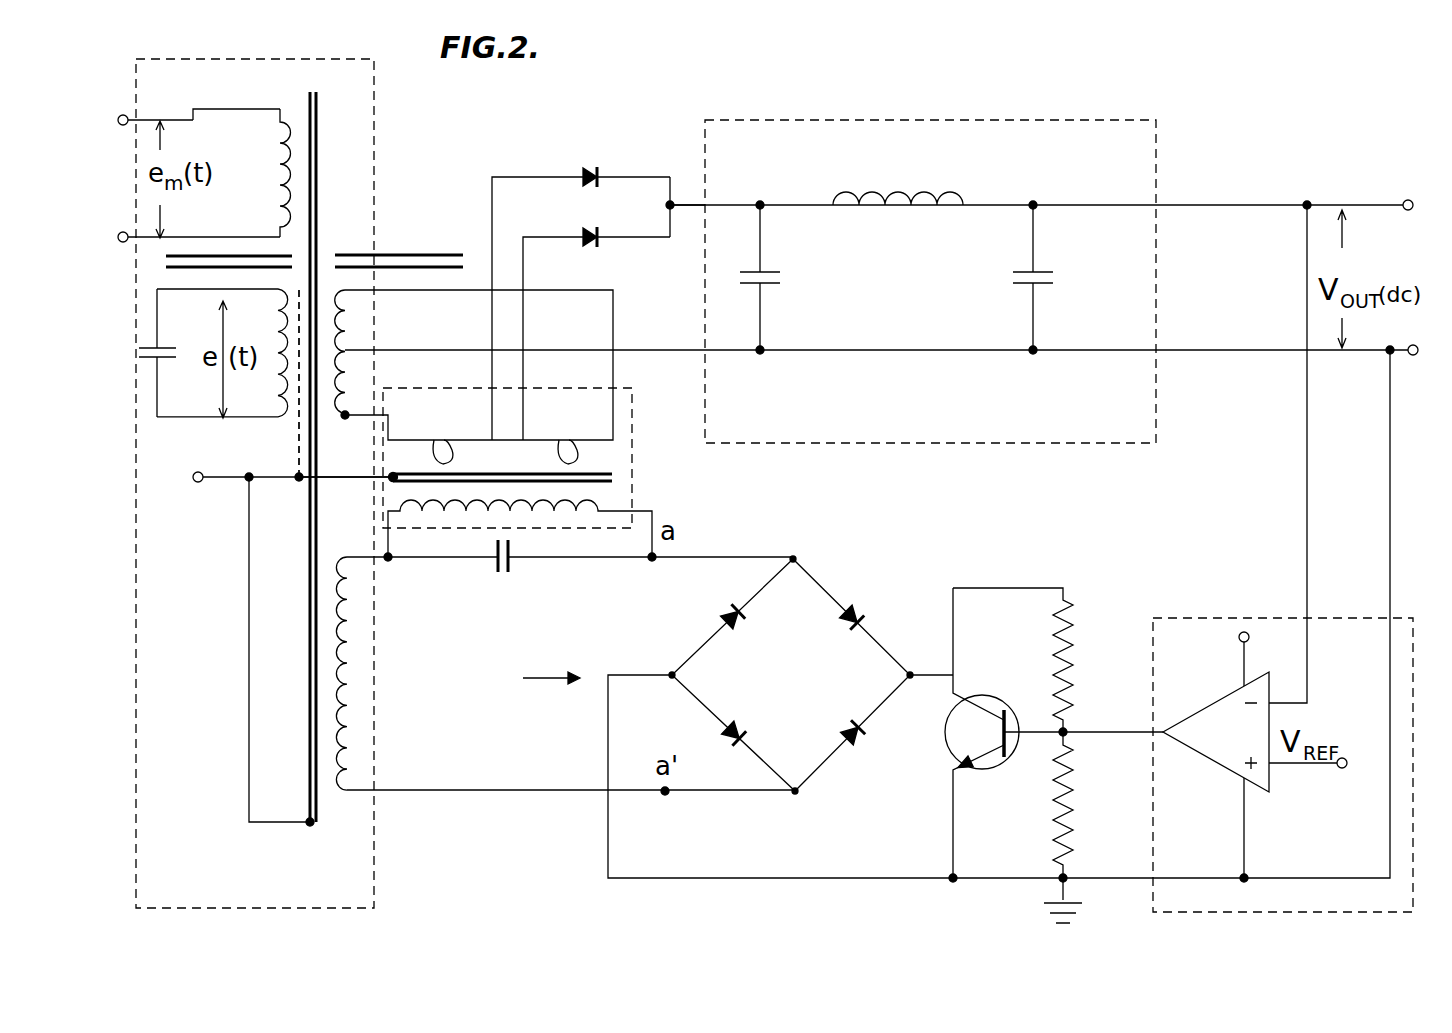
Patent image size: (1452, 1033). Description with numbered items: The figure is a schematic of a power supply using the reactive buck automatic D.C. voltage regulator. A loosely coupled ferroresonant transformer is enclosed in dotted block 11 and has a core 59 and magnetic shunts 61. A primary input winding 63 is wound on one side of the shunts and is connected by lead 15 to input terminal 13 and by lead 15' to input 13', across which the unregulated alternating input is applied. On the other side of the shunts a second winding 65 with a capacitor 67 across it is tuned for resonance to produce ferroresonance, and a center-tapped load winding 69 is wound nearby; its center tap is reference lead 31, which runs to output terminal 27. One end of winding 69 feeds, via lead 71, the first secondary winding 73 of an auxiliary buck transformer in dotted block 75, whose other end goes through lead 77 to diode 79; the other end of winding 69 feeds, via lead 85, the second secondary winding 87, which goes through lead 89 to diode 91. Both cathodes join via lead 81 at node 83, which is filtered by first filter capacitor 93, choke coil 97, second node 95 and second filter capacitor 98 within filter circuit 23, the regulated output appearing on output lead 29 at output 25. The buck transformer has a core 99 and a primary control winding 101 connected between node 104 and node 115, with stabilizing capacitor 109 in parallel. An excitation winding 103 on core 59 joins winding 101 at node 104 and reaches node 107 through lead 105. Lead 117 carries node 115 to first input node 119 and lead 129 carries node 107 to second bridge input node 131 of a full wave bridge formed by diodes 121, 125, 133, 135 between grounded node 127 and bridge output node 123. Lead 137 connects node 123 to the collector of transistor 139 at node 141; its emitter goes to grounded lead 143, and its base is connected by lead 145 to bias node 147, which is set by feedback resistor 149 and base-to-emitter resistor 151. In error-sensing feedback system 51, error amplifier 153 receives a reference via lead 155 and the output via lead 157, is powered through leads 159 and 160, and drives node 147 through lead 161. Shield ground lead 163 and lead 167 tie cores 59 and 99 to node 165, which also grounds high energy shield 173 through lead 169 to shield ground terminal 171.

The dotted block 11 is at (272, 52).
The input terminal 13 is at (146, 96).
The input 13' is at (116, 222).
The lead 15 is at (236, 94).
The lead 15' is at (204, 219).
The core 59 is at (318, 120).
The magnetic shunts 61 is at (170, 270).
The primary coil or input winding 63 is at (282, 148).
The second winding 65 is at (280, 314).
The capacitor 67 is at (162, 344).
The secondary or load winding 69 is at (345, 372).
The lead 71 is at (613, 326).
The first secondary winding 73 is at (587, 452).
The auxiliary buck transformer 75 is at (632, 440).
The lead 77 is at (523, 270).
The diode 79 is at (594, 246).
The lead 81 is at (690, 205).
The node 83 is at (760, 203).
The lead 85 is at (345, 419).
The second secondary winding 87 is at (432, 455).
The lead 89 is at (492, 186).
The diode 91 is at (588, 168).
The first filter capacitor 93 is at (784, 280).
The second node 95 is at (1033, 203).
The series filter inductor or choke coil 97 is at (896, 198).
The second filter capacitor 98 is at (1056, 280).
The core 99 is at (612, 478).
The primary auxiliary buck transformer control winding 101 is at (452, 514).
The excitation winding 103 is at (347, 652).
The node 104 is at (388, 562).
The lead 105 is at (448, 791).
The node 107 is at (665, 795).
The stabilizing capacitor 109 is at (500, 572).
The node 115 is at (654, 560).
The lead 117 is at (716, 557).
The first input node 119 is at (790, 565).
The diode 121 is at (850, 622).
The bridge output node 123 is at (908, 675).
The diode 125 is at (738, 616).
The grounded node 127 is at (676, 675).
The lead 129 is at (746, 791).
The second bridge input node 131 is at (795, 790).
The diode 133 is at (736, 728).
The diode 135 is at (850, 726).
The lead 137 is at (935, 676).
The transistor 139 is at (948, 750).
The collector reference voltage-establishing node 141 is at (958, 674).
The grounded lead 143 is at (886, 878).
The lead 145 is at (1028, 736).
The base drive bias-establishing node 147 is at (1066, 730).
The first negative feedback resistor 149 is at (1074, 614).
The second base-to-emitter resistor 151 is at (1053, 820).
The output error amplifier 153 is at (1206, 708).
The lead 155 is at (1320, 768).
The lead 157 is at (1307, 280).
The lead 159 is at (1244, 816).
The lead 160 is at (1244, 650).
The lead 161 is at (1132, 732).
The shield ground lead 163 is at (249, 796).
The node 165 is at (299, 480).
The lead 167 is at (344, 478).
The lead 169 is at (238, 478).
The shield ground terminal 171 is at (194, 482).
The high energy shield 173 is at (297, 454).
The filter circuit 23 is at (820, 120).
The output 25 is at (1404, 200).
The output terminal 27 is at (1413, 356).
The output lead 29 is at (1222, 205).
The reference lead 31 is at (1220, 350).
The error-sensing feedback system 51 is at (1208, 590).